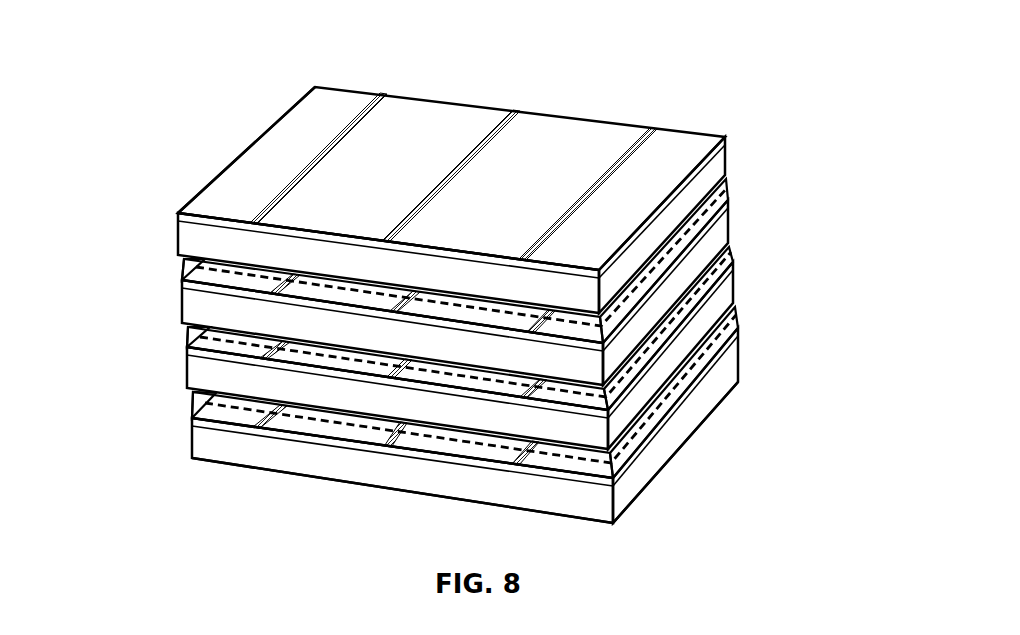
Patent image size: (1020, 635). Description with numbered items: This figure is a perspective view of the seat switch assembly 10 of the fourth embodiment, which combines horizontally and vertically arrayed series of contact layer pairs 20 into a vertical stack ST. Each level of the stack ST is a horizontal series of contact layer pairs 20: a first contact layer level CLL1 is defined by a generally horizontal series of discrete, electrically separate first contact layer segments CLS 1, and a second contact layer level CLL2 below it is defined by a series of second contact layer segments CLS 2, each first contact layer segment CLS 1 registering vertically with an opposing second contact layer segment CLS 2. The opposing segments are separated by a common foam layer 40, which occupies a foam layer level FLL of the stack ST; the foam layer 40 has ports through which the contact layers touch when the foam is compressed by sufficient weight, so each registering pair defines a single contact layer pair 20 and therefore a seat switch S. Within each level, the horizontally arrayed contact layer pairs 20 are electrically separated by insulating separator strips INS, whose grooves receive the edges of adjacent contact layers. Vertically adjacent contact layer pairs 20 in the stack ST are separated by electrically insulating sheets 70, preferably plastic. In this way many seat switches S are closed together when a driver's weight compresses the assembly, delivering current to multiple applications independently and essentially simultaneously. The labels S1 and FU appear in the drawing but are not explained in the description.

The seat switch assembly 10 is at (788, 52).
The contact layer pair 20 is at (790, 128).
The foam layer 40 is at (414, 281).
The insulating sheet 70 is at (727, 190).
The stack ST is at (228, 76).
The first side S1 is at (317, 86).
The seat switch S is at (163, 232).
The separator strip INS is at (382, 93).
The first contact layer segment CLS 1 is at (430, 118).
The second contact layer segment CLS 2 is at (234, 463).
The first contact layer level CLL1 is at (215, 180).
The second contact layer level CLL2 is at (185, 261).
The foam layer level FLL is at (187, 363).
The functional unit FU is at (727, 163).